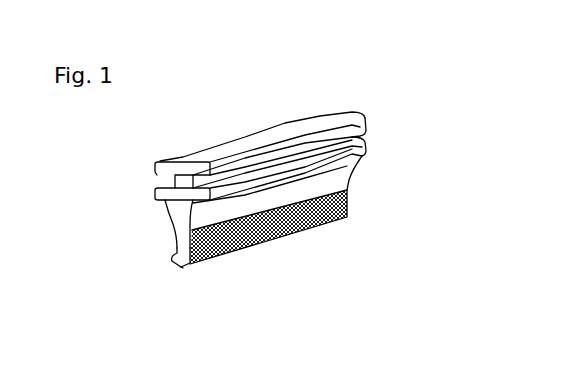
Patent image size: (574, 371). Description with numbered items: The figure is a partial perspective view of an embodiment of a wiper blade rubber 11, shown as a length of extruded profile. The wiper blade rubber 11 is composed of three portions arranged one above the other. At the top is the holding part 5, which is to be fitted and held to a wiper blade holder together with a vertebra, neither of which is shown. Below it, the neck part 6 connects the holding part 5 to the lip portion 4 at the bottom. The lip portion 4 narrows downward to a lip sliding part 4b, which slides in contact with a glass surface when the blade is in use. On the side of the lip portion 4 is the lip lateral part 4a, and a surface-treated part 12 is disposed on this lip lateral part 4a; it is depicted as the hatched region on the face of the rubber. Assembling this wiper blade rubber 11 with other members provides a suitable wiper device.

The holding part 5 is at (182, 156).
The neck part 6 is at (364, 156).
The wiper blade rubber 11 is at (141, 204).
The lip portion 4 is at (178, 266).
The lip lateral part 4a is at (160, 242).
The lip sliding part 4b is at (190, 269).
The surface-treated part 12 is at (263, 242).